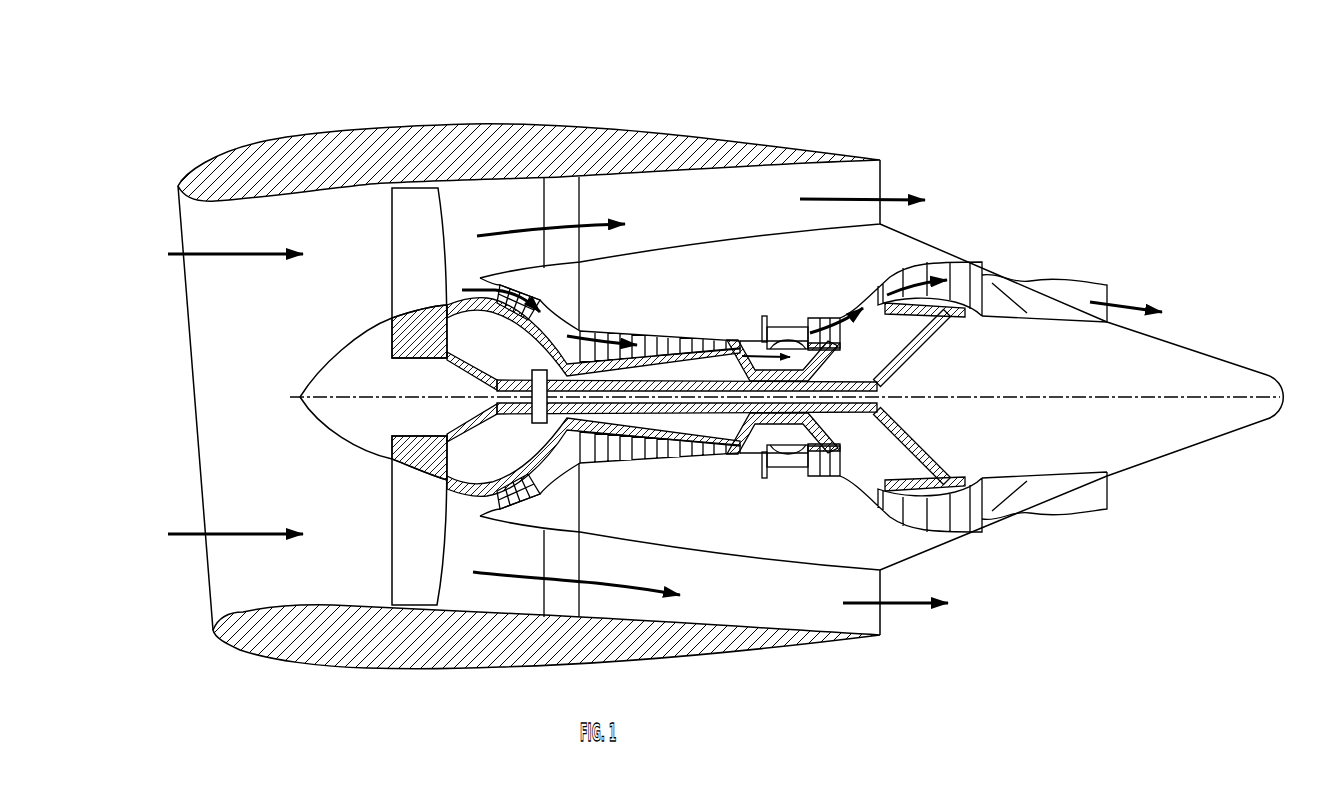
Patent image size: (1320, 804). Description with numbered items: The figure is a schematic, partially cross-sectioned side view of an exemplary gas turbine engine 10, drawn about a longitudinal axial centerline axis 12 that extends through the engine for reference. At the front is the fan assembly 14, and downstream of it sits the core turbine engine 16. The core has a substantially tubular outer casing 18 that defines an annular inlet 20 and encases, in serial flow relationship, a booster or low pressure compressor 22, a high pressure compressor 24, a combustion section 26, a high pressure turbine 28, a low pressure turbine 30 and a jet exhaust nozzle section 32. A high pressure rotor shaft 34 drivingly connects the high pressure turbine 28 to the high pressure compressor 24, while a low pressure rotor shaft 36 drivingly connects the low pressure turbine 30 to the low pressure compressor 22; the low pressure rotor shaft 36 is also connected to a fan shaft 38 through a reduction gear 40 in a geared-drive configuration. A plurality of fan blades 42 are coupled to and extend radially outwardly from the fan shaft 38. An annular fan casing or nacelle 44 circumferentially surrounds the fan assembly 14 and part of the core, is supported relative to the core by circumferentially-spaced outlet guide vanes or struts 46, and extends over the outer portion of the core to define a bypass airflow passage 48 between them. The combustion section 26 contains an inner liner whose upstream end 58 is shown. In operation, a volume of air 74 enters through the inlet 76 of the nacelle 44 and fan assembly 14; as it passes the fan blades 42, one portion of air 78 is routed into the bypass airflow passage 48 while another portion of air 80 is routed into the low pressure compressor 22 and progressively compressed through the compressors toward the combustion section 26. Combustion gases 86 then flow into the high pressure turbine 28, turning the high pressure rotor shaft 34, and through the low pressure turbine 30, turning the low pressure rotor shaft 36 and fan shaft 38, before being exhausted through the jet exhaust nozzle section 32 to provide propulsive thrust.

The gas turbine engine 10 is at (1022, 146).
The axial centerline axis 12 is at (1050, 395).
The fan assembly 14 is at (466, 201).
The core turbine engine 16 is at (774, 221).
The outer casing 18 is at (733, 562).
The annular inlet 20 is at (480, 503).
The low pressure compressor 22 is at (540, 476).
The high pressure compressor 24 is at (610, 457).
The combustion section 26 is at (780, 457).
The high pressure turbine 28 is at (840, 467).
The low pressure turbine 30 is at (963, 536).
The jet exhaust nozzle section 32 is at (1030, 512).
The high pressure rotor shaft 34 is at (835, 363).
The low pressure rotor shaft 36 is at (923, 350).
The fan shaft 38 is at (448, 352).
The reduction gear 40 is at (535, 360).
The fan blades 42 is at (405, 223).
The nacelle 44 is at (392, 125).
The outlet guide vanes 46 is at (568, 207).
The bypass airflow passage 48 is at (702, 222).
The upstream end of the inner liner 58 is at (592, 328).
The air 74 is at (214, 250).
The inlet 76 is at (283, 558).
The bypass air 78 is at (895, 197).
The core air 80 is at (482, 278).
The combustion gases 86 is at (826, 323).